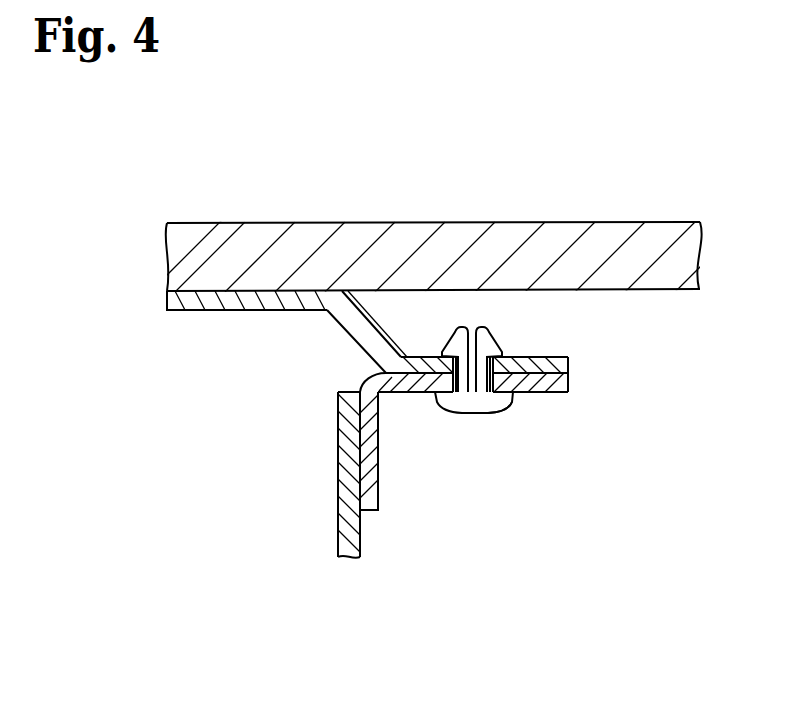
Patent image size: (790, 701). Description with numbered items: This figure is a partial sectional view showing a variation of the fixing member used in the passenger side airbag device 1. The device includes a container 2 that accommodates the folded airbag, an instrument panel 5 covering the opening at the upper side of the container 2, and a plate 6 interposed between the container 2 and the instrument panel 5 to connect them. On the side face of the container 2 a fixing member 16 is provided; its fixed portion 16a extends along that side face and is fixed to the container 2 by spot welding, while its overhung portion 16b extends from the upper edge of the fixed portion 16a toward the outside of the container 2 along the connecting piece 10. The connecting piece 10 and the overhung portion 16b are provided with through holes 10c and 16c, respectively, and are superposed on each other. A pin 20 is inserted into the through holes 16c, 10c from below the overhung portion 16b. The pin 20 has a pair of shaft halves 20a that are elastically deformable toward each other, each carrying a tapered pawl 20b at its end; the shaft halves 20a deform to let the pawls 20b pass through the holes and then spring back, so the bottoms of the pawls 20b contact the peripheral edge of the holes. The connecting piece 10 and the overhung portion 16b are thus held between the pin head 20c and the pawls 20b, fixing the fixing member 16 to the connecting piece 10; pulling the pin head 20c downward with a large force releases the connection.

The passenger side airbag device 1 is at (171, 448).
The container 2 is at (340, 468).
The instrument panel 5 is at (242, 244).
The plate 6 is at (195, 312).
The connecting piece 10 is at (568, 356).
The through hole 10c is at (512, 355).
The fixing member 16 is at (388, 405).
The fixed portion 16a is at (378, 496).
The overhung portion 16b is at (570, 386).
The through hole 16c is at (530, 393).
The pin 20 is at (470, 415).
The shaft halves 20a is at (472, 328).
The pawl 20b is at (450, 338).
The pin head 20c is at (483, 407).